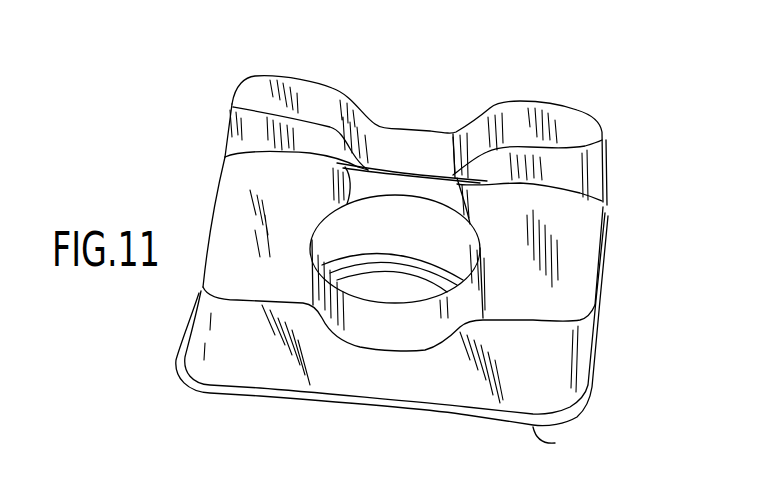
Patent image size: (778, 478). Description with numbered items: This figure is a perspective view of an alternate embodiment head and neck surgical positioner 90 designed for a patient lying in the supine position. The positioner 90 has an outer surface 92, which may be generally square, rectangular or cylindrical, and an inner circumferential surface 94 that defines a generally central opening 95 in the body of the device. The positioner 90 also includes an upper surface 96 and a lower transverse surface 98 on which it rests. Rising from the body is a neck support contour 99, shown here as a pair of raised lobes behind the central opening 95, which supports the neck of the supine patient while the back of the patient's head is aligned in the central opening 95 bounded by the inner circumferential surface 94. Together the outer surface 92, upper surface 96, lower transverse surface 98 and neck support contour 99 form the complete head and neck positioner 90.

The head and neck positioner 90 is at (642, 131).
The outer surface 92 is at (563, 350).
The inner circumferential surface 94 is at (393, 213).
The central opening 95 is at (374, 285).
The upper surface 96 is at (542, 264).
The lower transverse surface 98 is at (555, 443).
The neck support contour 99 is at (285, 92).